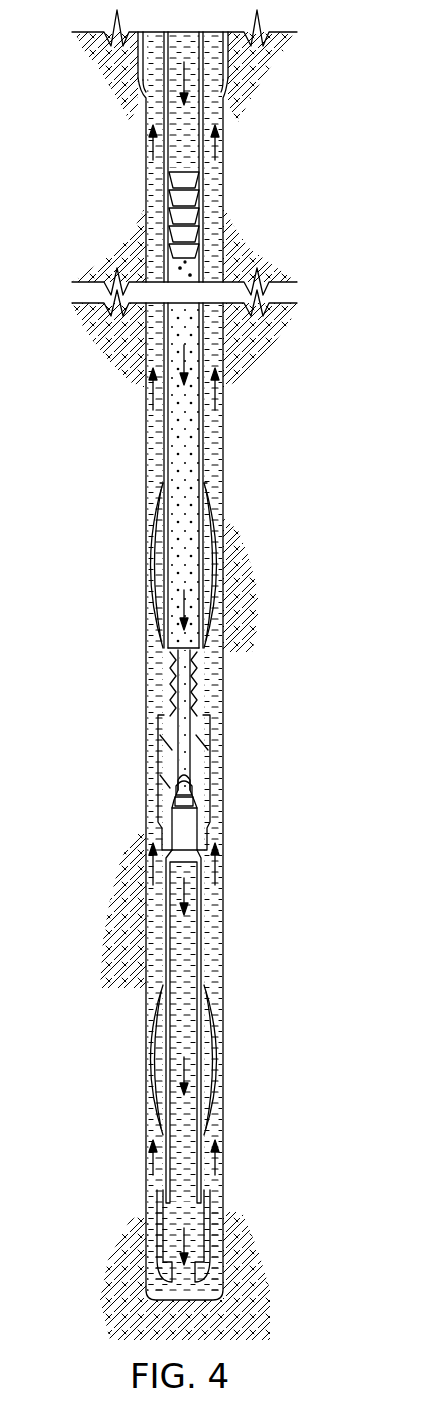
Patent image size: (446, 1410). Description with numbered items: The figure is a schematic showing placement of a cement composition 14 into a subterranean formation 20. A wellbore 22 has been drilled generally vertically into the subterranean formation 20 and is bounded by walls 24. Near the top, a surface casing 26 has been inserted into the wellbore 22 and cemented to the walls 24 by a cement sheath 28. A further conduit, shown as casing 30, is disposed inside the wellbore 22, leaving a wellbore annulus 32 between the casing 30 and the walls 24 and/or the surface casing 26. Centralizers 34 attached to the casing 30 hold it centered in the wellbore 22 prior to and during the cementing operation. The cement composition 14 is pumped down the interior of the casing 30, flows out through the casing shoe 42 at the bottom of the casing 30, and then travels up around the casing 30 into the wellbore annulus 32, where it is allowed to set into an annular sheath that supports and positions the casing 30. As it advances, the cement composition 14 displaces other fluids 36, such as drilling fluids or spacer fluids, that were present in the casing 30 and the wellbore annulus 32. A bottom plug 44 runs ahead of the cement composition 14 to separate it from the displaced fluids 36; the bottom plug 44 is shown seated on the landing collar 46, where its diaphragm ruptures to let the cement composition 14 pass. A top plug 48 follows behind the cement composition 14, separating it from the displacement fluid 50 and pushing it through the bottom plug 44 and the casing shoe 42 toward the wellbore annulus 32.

The cement composition 14 is at (166, 345).
The subterranean formation 20 is at (78, 598).
The wellbore 22 is at (228, 453).
The walls 24 is at (225, 200).
The surface casing 26 is at (228, 80).
The cement sheath 28 is at (140, 80).
The casing 30 is at (204, 348).
The wellbore annulus 32 is at (148, 452).
The centralizers 34 is at (148, 1060).
The displaced fluids 36 is at (192, 890).
The casing shoe 42 is at (215, 1230).
The bottom plug 44 is at (204, 702).
The landing collar 46 is at (162, 735).
The top plug 48 is at (166, 212).
The displacement fluid 50 is at (143, 92).